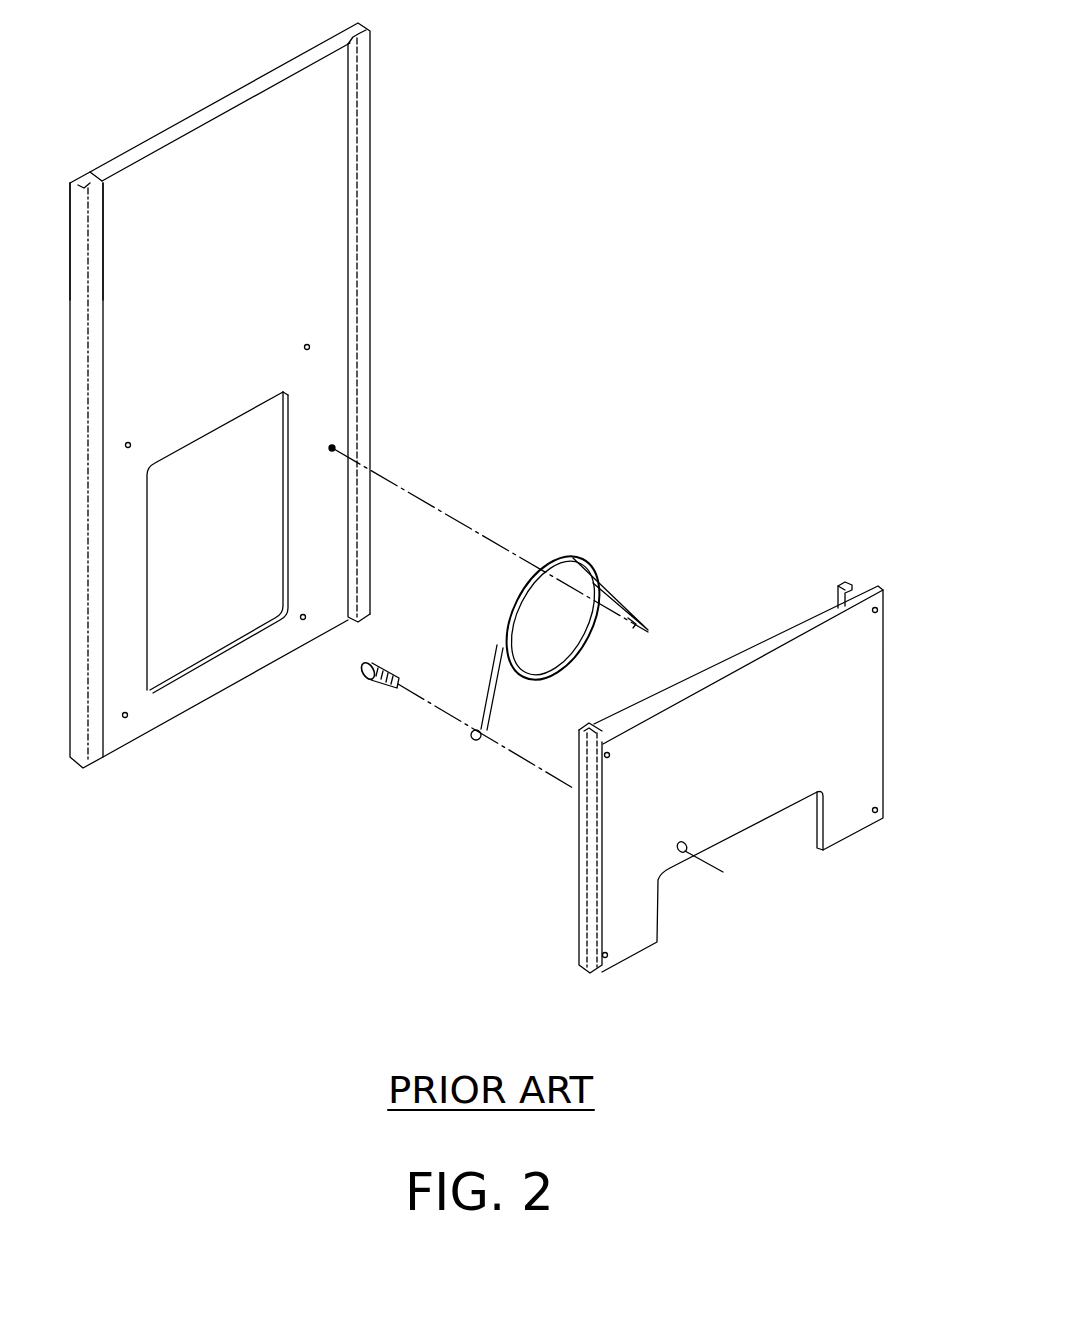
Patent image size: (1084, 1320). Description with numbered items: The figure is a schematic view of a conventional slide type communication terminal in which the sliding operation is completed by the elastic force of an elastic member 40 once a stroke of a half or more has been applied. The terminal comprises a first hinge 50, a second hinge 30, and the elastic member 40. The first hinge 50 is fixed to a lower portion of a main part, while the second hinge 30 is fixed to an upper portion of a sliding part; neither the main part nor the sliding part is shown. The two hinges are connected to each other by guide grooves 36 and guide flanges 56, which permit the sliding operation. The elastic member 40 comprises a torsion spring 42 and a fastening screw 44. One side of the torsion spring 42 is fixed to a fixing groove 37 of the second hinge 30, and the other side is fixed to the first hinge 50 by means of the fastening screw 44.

The second hinge 30 is at (318, 150).
The guide groove 36 is at (88, 183).
The fixing groove 37 is at (334, 448).
The elastic member 40 is at (583, 415).
The torsion spring 42 is at (568, 556).
The fastening screw 44 is at (380, 668).
The first hinge 50 is at (872, 558).
The guide flange 56 is at (597, 727).